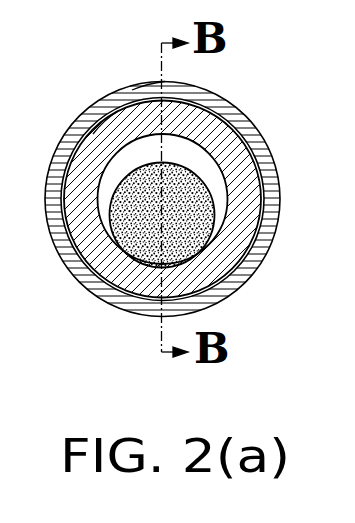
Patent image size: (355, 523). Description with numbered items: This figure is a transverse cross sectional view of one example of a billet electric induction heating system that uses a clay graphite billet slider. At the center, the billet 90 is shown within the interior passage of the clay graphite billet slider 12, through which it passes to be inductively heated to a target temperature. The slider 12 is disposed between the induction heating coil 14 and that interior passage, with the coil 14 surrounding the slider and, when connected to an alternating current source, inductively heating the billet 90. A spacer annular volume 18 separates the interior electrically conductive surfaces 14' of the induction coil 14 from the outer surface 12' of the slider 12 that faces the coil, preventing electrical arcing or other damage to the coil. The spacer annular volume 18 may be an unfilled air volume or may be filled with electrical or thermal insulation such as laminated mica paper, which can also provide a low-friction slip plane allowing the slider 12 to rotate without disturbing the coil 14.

The clay graphite billet slider 12 is at (176, 194).
The outer surface of the clay graphite billet slider 12' is at (90, 104).
The induction heating coil 14 is at (177, 199).
The interior electrically conductive surfaces of the induction coil 14' is at (139, 74).
The spacer annular volume 18 is at (218, 113).
The billet 90 is at (200, 207).